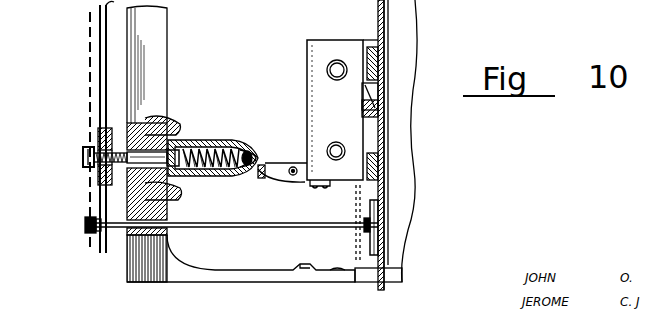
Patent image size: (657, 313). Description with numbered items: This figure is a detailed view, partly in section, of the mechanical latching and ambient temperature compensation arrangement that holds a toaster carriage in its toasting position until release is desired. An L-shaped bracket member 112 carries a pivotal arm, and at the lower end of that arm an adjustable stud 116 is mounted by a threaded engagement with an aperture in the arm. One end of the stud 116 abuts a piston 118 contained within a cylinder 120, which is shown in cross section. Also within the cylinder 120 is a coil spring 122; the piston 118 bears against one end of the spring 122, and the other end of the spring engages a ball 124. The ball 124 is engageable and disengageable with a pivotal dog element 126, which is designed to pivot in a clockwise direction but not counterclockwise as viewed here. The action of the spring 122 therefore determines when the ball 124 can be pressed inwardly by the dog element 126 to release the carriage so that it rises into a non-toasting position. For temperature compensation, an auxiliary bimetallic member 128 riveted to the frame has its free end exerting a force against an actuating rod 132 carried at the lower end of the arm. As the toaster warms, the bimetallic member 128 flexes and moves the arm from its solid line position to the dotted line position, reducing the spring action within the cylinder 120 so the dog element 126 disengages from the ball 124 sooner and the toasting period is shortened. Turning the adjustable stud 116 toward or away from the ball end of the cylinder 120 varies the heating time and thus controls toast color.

The L-shaped bracket member 112 is at (143, 276).
The adjustable stud 116 is at (84, 168).
The piston 118 is at (182, 173).
The cylinder 120 is at (190, 140).
The coil spring 122 is at (222, 145).
The ball 124 is at (258, 152).
The pivotal dog element 126 is at (268, 173).
The auxiliary bimetallic member 128 is at (362, 236).
The actuating rod 132 is at (236, 228).